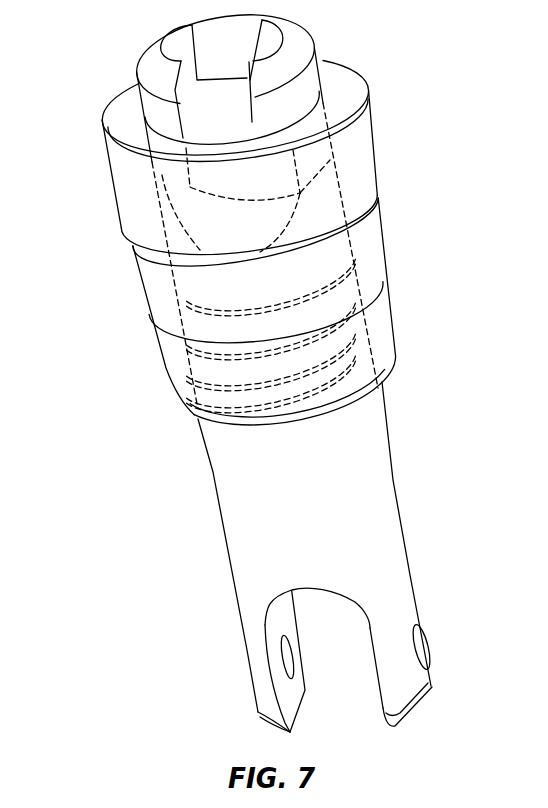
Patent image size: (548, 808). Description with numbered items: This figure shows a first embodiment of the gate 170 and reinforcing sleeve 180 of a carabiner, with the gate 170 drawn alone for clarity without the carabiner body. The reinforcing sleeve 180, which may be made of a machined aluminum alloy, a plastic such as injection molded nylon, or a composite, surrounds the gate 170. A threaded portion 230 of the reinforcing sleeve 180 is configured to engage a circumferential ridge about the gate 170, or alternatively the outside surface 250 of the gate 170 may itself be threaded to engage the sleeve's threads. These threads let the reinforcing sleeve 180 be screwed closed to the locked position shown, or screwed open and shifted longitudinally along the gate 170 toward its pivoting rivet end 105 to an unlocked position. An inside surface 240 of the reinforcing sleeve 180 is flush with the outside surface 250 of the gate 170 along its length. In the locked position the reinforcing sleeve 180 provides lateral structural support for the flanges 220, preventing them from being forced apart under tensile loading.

The pivoting rivet end 105 is at (437, 567).
The gate 170 is at (257, 523).
The reinforcing sleeve 180 is at (370, 244).
The flanges 220 is at (155, 74).
The threaded portion 230 is at (412, 265).
The inside surface 240 is at (338, 150).
The outside surface 250 is at (323, 182).